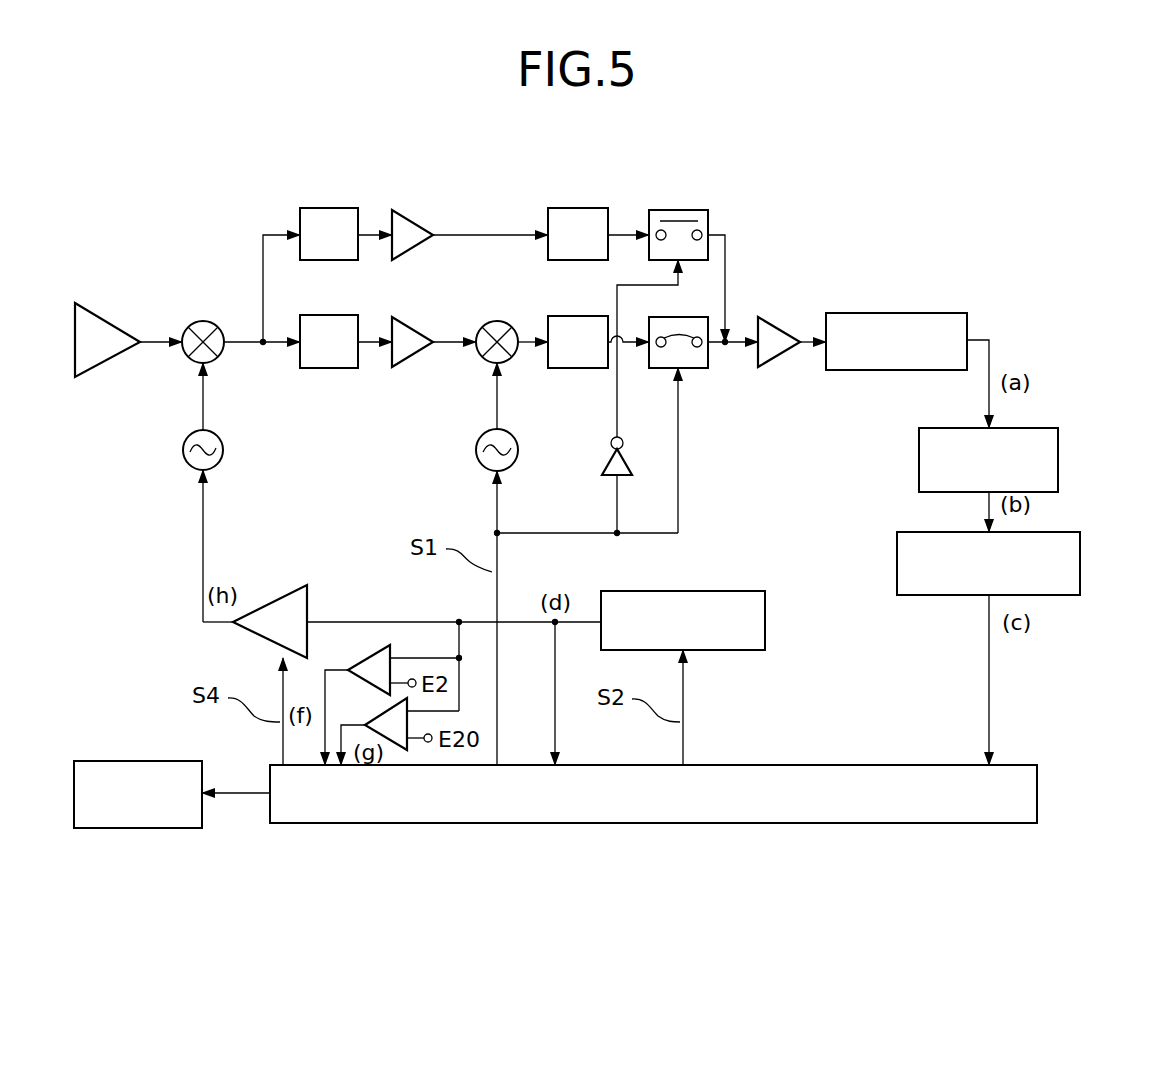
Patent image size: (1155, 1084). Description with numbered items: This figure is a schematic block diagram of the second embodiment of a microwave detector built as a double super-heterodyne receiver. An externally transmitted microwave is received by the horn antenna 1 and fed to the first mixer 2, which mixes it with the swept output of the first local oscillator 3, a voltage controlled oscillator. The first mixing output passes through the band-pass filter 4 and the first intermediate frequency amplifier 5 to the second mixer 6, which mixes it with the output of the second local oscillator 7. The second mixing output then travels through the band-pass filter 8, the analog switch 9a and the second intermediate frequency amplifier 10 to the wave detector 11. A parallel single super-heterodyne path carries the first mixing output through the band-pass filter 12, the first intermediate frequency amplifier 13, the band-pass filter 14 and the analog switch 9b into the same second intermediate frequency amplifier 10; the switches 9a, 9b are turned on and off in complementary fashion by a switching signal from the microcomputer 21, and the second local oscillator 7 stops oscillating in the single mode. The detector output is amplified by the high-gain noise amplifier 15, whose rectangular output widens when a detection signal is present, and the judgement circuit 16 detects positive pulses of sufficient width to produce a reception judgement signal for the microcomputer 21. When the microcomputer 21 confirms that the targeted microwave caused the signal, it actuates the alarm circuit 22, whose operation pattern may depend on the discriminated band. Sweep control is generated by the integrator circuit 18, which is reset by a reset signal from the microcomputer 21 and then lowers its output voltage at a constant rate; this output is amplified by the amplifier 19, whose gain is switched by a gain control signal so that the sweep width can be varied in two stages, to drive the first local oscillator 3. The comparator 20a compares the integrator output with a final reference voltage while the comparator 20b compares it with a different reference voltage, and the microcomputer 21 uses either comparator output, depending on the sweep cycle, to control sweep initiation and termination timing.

The horn antenna 1 is at (100, 314).
The first mixer 2 is at (203, 321).
The first local oscillator 3 is at (183, 450).
The band-pass filter 4 is at (332, 368).
The first intermediate frequency amplifier 5 is at (412, 365).
The second mixer 6 is at (481, 365).
The second local oscillator 7 is at (475, 449).
The band-pass filter 8 is at (571, 368).
The analog switch 9a is at (690, 368).
The analog switch 9b is at (675, 209).
The second intermediate frequency amplifier 10 is at (778, 364).
The wave detector 11 is at (897, 370).
The band-pass filter 12 is at (328, 208).
The first intermediate frequency amplifier 13 is at (409, 216).
The band-pass filter 14 is at (576, 208).
The noise amplifier 15 is at (1058, 456).
The judgement circuit 16 is at (1082, 566).
The integrator circuit 18 is at (680, 591).
The amplifier 19 is at (280, 602).
The comparator 20a is at (372, 652).
The comparator 20b is at (388, 708).
The microcomputer 21 is at (425, 823).
The alarm circuit 22 is at (125, 828).